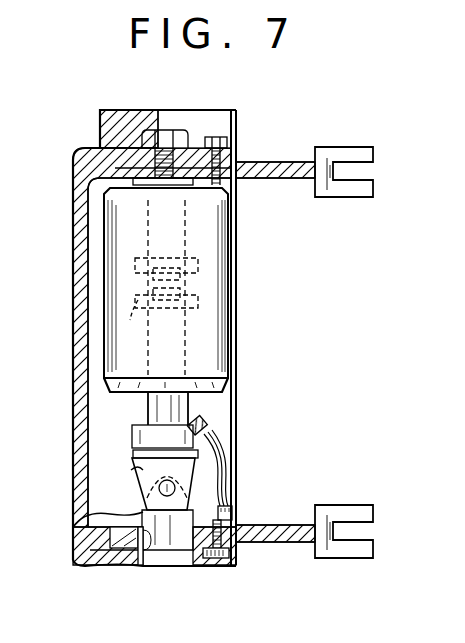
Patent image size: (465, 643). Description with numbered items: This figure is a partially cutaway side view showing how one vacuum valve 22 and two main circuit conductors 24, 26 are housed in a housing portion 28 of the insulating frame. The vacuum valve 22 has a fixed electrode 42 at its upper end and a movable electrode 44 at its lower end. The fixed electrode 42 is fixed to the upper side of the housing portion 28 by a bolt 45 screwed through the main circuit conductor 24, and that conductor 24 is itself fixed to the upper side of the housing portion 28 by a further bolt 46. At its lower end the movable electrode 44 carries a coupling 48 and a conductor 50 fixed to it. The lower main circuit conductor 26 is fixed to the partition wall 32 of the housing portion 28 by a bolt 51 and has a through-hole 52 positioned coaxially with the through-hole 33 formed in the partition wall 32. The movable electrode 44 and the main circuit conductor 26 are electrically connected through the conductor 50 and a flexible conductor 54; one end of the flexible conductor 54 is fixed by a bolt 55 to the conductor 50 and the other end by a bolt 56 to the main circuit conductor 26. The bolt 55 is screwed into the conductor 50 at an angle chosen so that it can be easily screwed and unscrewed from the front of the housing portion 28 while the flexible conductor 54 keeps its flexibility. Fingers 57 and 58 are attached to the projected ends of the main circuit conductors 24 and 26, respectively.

The vacuum valve 22 is at (230, 318).
The main circuit conductor 24 is at (267, 163).
The main circuit conductor 26 is at (271, 542).
The housing portion 28 is at (73, 264).
The partition wall 32 is at (105, 564).
The through-hole 33 is at (146, 564).
The fixed electrode 42 is at (198, 268).
The movable electrode 44 is at (136, 316).
The bolt 45 is at (166, 118).
The bolt 46 is at (218, 136).
The coupling 48 is at (132, 471).
The conductor 50 is at (148, 432).
The bolt 51 is at (214, 562).
The through-hole 52 is at (76, 523).
The flexible conductor 54 is at (217, 458).
The bolt 55 is at (207, 424).
The bolt 56 is at (227, 509).
The finger 57 is at (348, 148).
The finger 58 is at (346, 505).